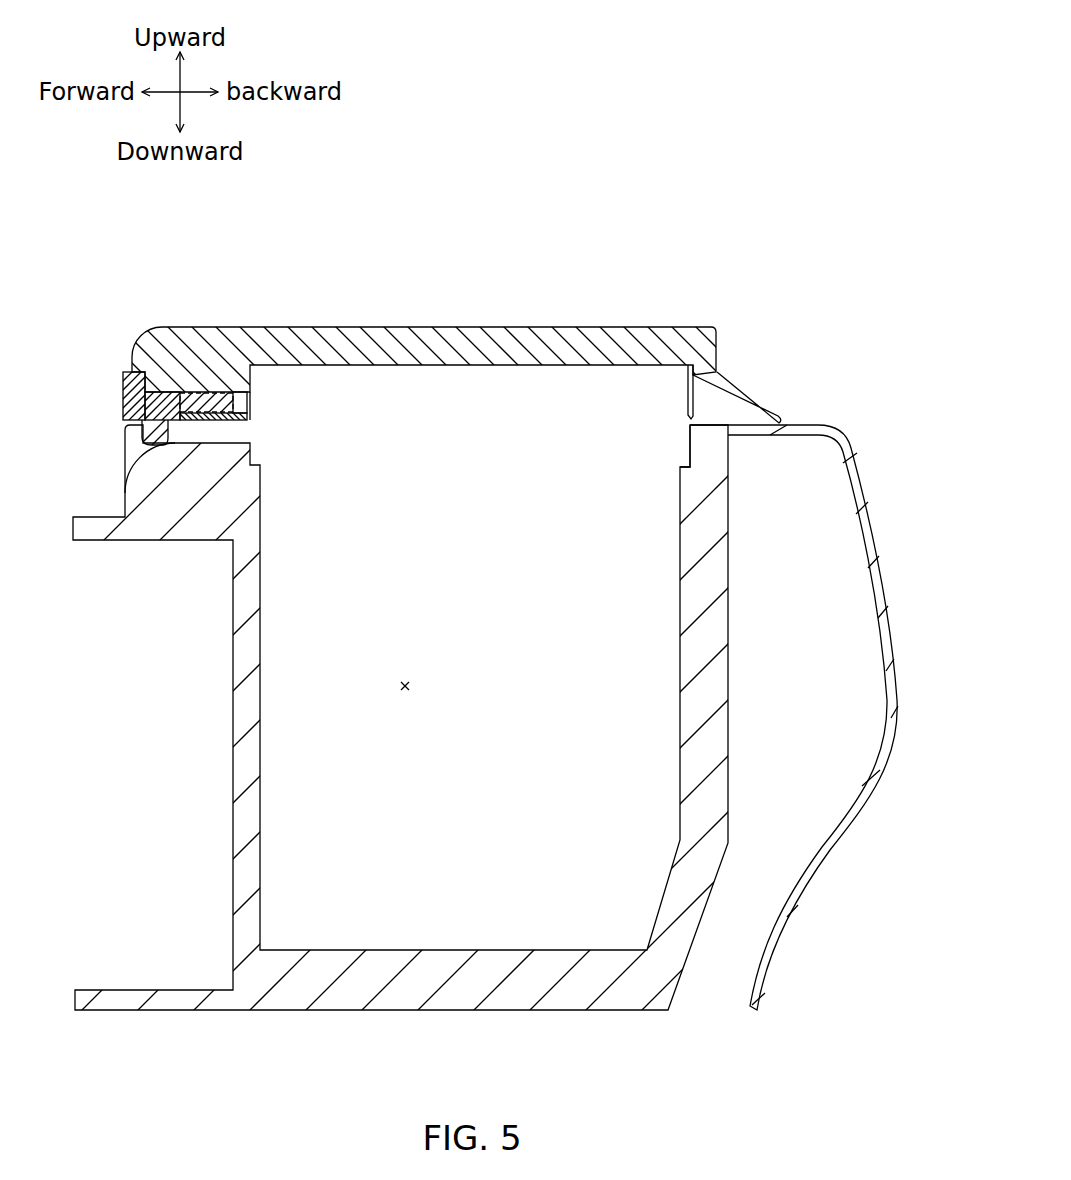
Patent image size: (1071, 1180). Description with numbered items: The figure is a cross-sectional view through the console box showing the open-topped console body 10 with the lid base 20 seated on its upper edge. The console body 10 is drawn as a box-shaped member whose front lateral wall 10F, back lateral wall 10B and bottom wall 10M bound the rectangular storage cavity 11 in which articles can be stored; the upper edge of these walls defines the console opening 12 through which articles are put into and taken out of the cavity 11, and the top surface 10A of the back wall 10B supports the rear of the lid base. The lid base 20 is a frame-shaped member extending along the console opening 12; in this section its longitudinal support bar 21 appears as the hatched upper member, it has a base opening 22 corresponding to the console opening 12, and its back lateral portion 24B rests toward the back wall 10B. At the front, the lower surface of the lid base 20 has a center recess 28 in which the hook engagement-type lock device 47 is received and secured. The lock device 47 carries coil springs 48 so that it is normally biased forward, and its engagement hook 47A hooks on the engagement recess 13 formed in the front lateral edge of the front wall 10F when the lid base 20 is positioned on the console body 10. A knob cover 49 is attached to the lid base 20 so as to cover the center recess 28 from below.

The console body 10 is at (535, 700).
The upper edge of rear wall 10A is at (742, 424).
The back lateral wall 10B is at (702, 758).
The front lateral wall 10F is at (243, 820).
The bottom wall 10M is at (460, 985).
The storage cavity 11 is at (400, 686).
The console opening 12 is at (688, 452).
The engagement recess 13 is at (150, 452).
The lid base 20 is at (428, 354).
The support bar 21 is at (453, 327).
The base opening 22 is at (688, 402).
The back lateral portion 24B is at (755, 402).
The center recess 28 is at (125, 409).
The lock device 47 is at (132, 392).
The engagement hook 47A is at (125, 493).
The coil springs 48 is at (213, 410).
The knob cover 49 is at (208, 407).